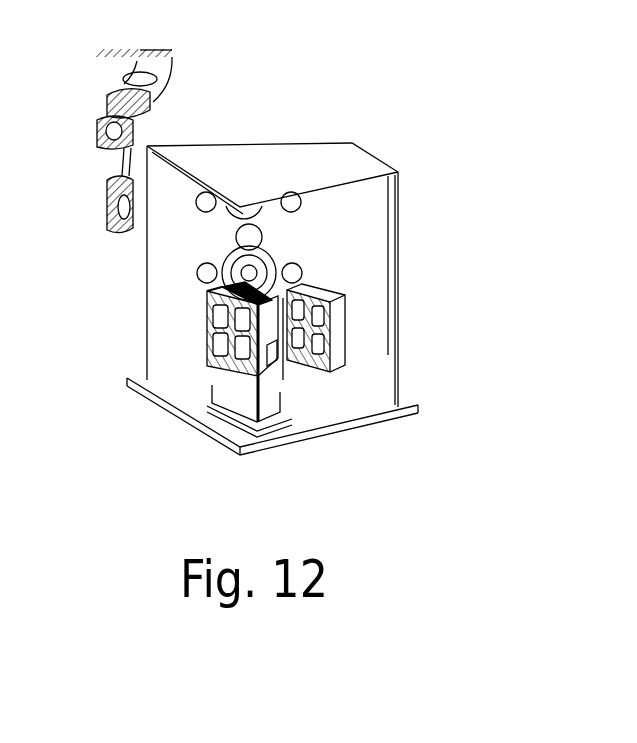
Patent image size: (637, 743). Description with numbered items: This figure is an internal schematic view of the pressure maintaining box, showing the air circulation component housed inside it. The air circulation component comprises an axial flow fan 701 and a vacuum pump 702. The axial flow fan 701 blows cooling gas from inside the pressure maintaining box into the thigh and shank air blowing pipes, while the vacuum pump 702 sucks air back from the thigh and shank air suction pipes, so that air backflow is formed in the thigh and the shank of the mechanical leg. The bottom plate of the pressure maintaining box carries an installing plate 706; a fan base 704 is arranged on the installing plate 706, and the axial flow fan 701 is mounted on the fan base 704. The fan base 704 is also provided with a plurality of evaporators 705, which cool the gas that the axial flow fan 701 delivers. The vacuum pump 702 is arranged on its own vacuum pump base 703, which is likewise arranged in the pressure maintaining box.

The axial flow fan 701 is at (220, 313).
The vacuum pump 702 is at (337, 356).
The vacuum pump base 703 is at (337, 393).
The fan base 704 is at (242, 402).
The evaporators 705 is at (270, 360).
The installing plate 706 is at (267, 418).